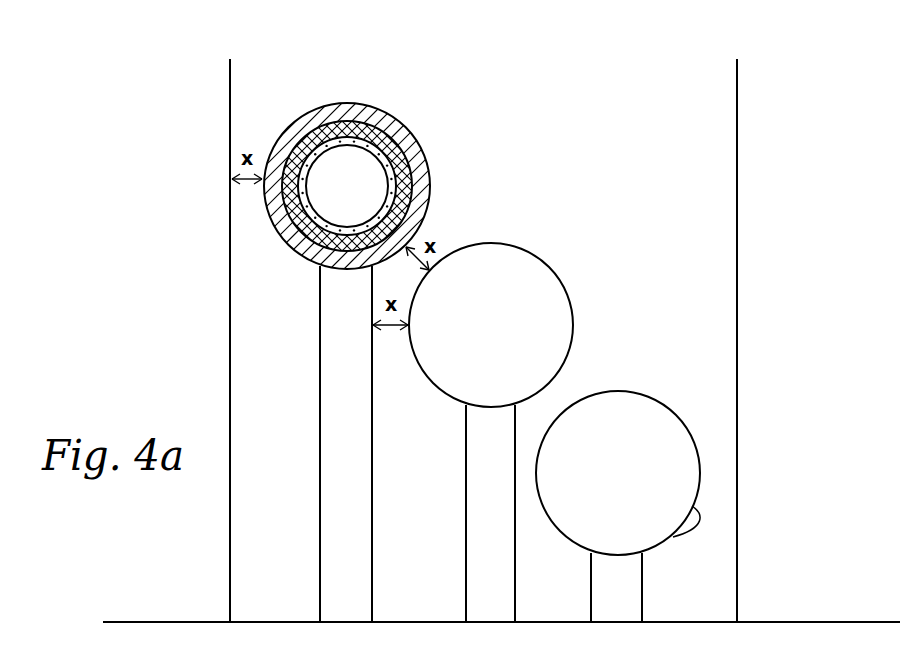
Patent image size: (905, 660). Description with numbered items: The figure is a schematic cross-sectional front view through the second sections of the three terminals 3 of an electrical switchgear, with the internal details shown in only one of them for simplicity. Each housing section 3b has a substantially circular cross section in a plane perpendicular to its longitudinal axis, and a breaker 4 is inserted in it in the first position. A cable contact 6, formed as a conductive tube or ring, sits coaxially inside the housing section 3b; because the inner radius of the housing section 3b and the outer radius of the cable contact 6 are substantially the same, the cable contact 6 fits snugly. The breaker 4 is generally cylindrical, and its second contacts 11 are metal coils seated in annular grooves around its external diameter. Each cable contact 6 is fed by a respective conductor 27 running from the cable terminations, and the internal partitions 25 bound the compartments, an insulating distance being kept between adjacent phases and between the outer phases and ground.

The housing section 3b is at (341, 154).
The second contact 11 is at (338, 122).
The breaker 4 is at (363, 165).
The terminal 3 is at (412, 146).
The cable contact 6 is at (430, 162).
The internal partition 25 is at (229, 266).
The conductor 27 is at (318, 347).